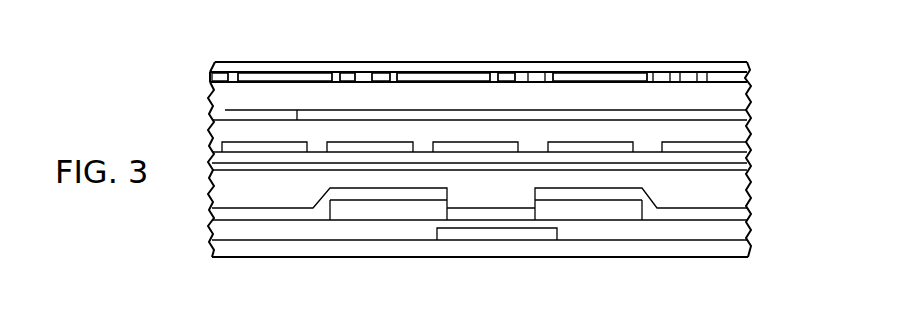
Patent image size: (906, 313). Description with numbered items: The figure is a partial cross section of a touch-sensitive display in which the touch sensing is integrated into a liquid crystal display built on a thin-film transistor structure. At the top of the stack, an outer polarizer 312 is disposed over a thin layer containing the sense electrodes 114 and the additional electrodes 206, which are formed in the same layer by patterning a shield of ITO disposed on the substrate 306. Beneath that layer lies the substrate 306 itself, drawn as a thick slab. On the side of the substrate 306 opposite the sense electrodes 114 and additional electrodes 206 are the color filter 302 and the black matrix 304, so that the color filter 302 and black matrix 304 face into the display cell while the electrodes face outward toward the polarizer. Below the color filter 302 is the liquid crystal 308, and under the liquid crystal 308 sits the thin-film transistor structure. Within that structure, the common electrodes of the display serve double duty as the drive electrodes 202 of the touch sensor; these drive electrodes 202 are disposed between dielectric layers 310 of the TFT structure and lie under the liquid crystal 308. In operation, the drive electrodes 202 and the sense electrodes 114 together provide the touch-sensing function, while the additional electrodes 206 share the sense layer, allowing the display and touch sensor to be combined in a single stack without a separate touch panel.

The sense electrodes 114 is at (215, 78).
The drive electrodes 202 is at (743, 167).
The additional electrodes 206 is at (288, 80).
The color filter 302 is at (740, 115).
The black matrix 304 is at (227, 113).
The substrate 306 is at (733, 93).
The liquid crystal 308 is at (733, 130).
The dielectric layers 310 is at (743, 157).
The outer polarizer 312 is at (653, 67).